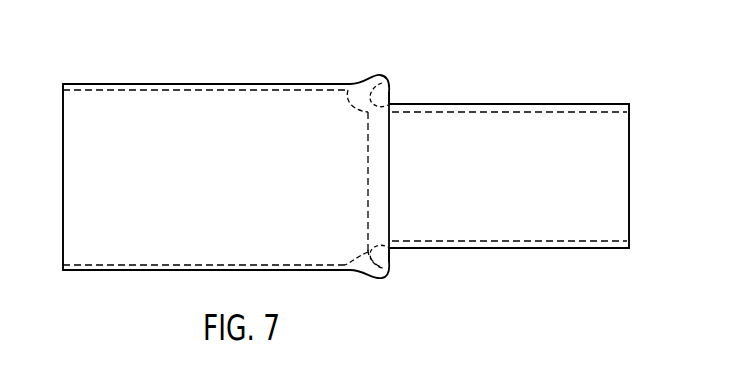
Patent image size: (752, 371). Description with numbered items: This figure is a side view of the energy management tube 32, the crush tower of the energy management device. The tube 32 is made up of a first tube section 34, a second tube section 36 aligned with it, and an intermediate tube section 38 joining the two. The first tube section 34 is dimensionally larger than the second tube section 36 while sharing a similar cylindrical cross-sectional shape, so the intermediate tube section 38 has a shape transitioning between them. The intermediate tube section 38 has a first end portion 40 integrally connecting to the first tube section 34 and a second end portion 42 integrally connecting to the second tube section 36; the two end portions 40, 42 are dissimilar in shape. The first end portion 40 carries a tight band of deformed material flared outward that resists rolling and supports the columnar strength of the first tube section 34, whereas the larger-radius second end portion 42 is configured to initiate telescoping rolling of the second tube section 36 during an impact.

The energy management tube 32 is at (587, 69).
The first tube section 34 is at (171, 78).
The second tube section 36 is at (521, 96).
The intermediate tube section 38 is at (402, 82).
The first end portion 40 is at (383, 77).
The second end portion 42 is at (347, 80).